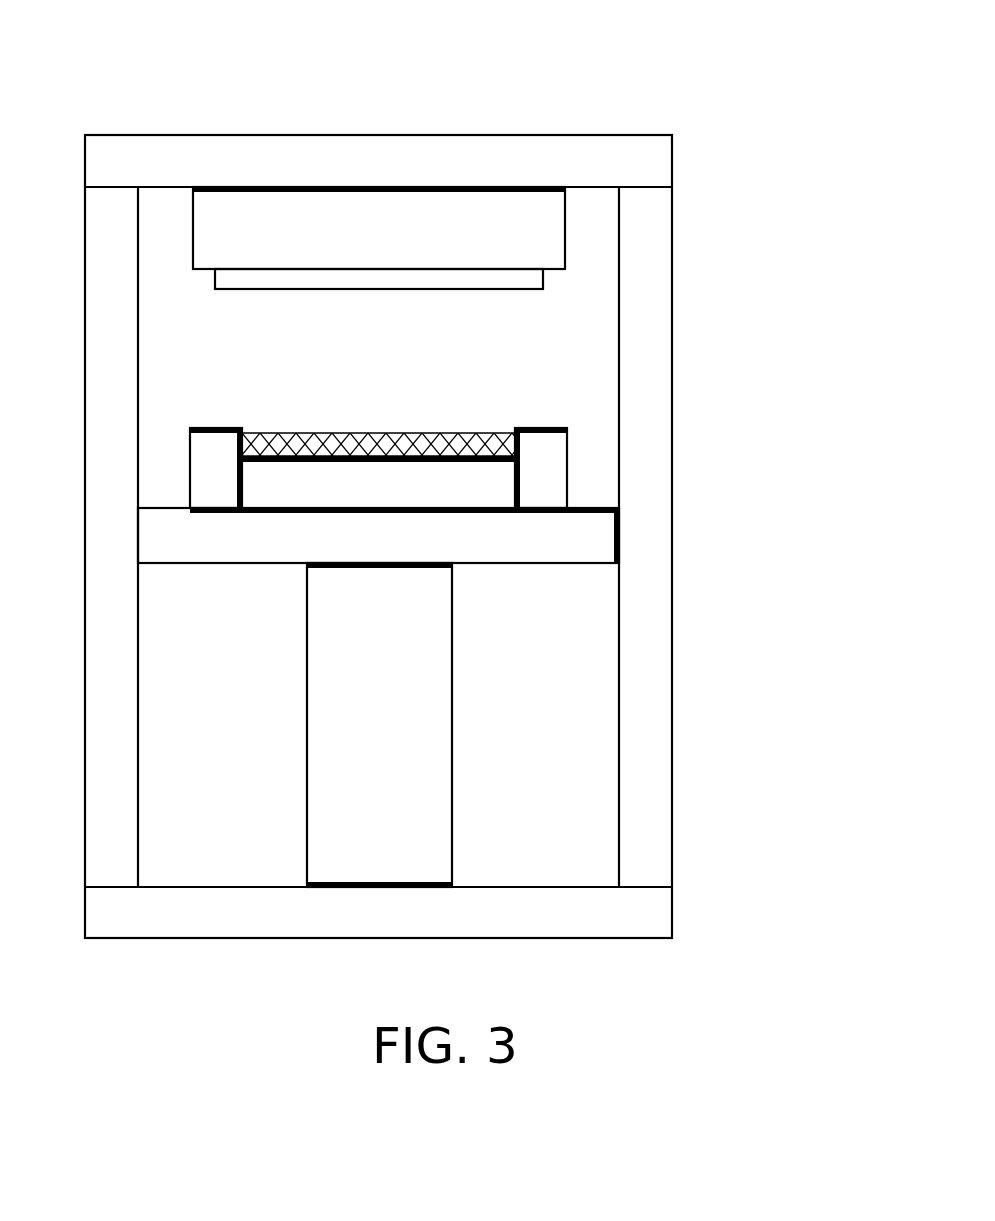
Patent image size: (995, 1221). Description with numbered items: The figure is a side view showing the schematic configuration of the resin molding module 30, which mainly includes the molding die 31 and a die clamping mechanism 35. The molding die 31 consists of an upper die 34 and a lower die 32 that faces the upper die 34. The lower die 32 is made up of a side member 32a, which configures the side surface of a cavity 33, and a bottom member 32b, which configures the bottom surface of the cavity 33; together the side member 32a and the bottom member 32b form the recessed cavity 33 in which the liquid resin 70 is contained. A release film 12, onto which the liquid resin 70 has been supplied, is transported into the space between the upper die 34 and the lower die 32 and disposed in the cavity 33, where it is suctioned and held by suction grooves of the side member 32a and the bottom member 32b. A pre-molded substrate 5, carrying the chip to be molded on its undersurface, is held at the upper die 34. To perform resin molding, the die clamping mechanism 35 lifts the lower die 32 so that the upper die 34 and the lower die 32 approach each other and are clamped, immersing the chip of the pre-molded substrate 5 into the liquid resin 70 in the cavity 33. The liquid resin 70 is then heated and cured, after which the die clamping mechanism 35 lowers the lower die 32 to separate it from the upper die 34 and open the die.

The resin molding module 30 is at (145, 70).
The upper die 34 is at (555, 240).
The pre-molded substrate 5 is at (212, 280).
The molding die 31 is at (808, 188).
The lower die 32 is at (747, 490).
The side member 32a is at (555, 477).
The bottom member 32b is at (483, 500).
The liquid resin 70 is at (378, 436).
The release film 12 is at (222, 427).
The cavity 33 is at (490, 420).
The die clamping mechanism 35 is at (427, 755).